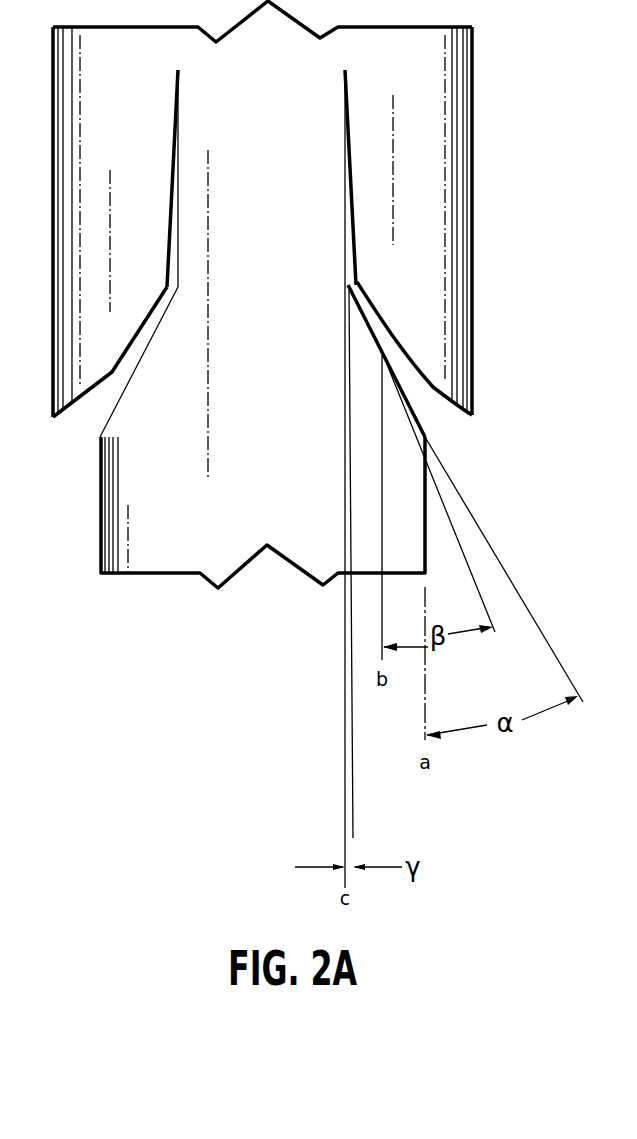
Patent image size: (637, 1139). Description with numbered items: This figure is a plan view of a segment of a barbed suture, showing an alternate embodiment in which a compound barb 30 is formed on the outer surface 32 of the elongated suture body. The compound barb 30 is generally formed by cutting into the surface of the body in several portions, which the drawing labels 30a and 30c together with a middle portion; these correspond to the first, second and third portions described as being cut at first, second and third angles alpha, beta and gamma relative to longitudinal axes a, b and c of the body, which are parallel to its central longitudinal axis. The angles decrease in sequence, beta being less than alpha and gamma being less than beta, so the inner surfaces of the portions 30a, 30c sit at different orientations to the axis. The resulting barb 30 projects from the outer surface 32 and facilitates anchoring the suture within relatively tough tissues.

The compound barb 30 is at (475, 247).
The tapered distal portion 30a is at (452, 402).
The inner surface 30c is at (342, 210).
The outer surface 32 is at (100, 485).